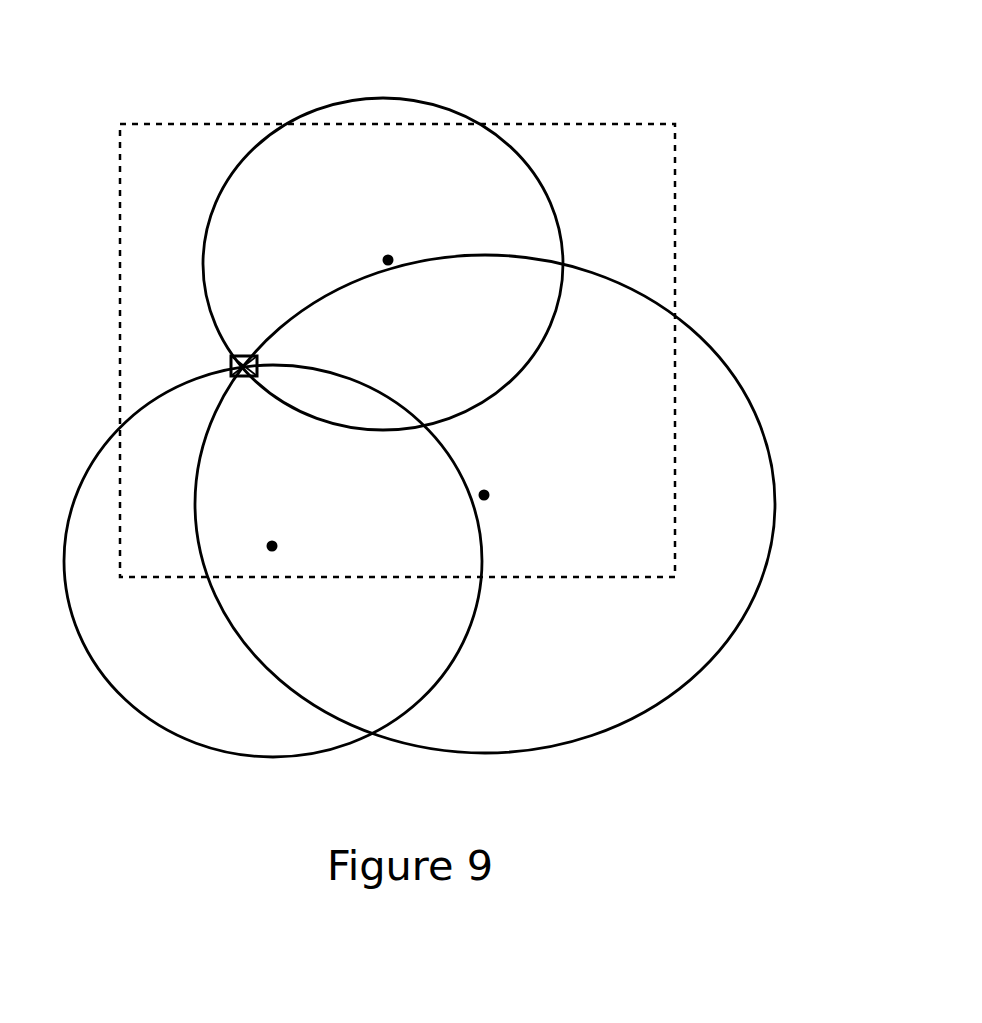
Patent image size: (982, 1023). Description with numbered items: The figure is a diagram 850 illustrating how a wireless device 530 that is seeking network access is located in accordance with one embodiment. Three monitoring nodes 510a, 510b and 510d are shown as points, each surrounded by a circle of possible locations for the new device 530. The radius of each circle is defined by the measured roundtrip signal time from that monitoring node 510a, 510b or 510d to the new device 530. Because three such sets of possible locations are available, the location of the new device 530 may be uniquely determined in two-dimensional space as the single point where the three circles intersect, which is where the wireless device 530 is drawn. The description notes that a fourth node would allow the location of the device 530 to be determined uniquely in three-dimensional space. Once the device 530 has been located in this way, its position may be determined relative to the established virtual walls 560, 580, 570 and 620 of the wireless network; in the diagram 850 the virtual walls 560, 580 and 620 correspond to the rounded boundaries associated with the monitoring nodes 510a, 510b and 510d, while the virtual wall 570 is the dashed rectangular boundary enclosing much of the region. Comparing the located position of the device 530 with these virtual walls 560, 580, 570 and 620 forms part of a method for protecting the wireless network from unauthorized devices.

The diagram 850 is at (673, 24).
The virtual wall 570 is at (110, 313).
The virtual wall 580 is at (532, 122).
The virtual wall 560 is at (682, 270).
The virtual wall 620 is at (608, 587).
The wireless device 530 is at (219, 360).
The monitoring node 510a is at (502, 492).
The monitoring node 510b is at (388, 247).
The monitoring node 510d is at (286, 536).